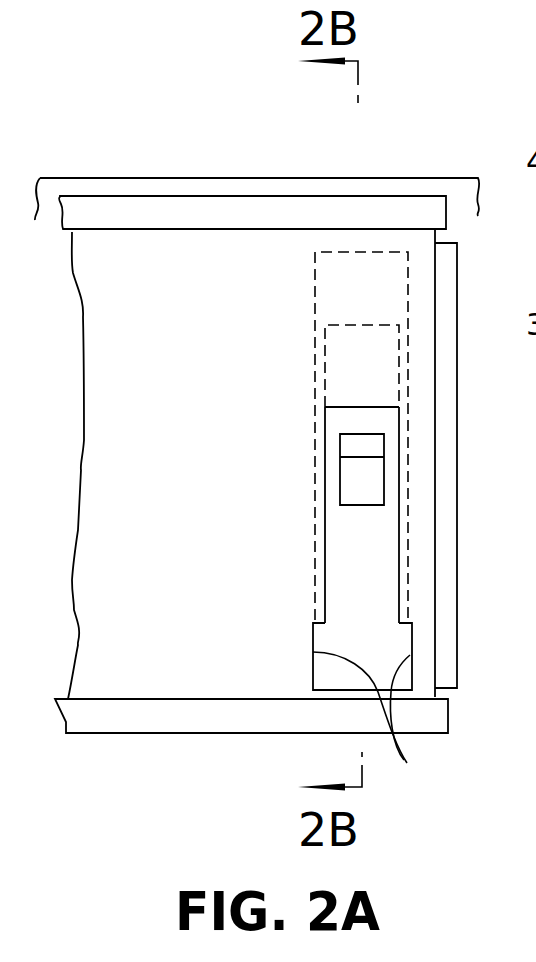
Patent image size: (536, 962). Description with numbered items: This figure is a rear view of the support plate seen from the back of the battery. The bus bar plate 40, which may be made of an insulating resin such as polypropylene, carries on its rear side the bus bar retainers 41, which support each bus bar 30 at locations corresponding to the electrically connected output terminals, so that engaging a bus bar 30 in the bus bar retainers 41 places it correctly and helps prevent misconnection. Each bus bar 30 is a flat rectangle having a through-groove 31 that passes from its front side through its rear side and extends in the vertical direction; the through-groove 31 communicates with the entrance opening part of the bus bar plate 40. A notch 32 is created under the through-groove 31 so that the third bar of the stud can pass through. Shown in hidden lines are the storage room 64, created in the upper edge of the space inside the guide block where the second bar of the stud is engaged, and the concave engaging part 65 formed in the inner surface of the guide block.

The bus bar 30 is at (137, 680).
The through-groove 31 is at (399, 566).
The notch 32 is at (381, 704).
The bus bar plate 40 is at (410, 185).
The bus bar retainer 41 is at (270, 213).
The storage room 64 is at (368, 382).
The concave engaging part 65 is at (368, 449).